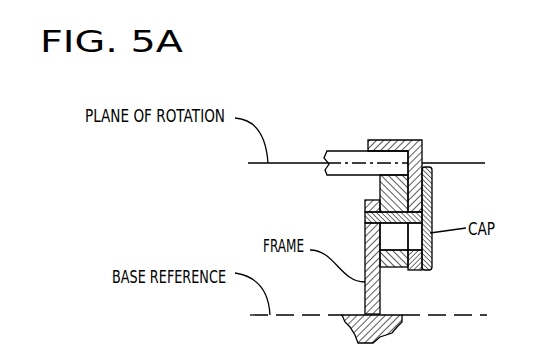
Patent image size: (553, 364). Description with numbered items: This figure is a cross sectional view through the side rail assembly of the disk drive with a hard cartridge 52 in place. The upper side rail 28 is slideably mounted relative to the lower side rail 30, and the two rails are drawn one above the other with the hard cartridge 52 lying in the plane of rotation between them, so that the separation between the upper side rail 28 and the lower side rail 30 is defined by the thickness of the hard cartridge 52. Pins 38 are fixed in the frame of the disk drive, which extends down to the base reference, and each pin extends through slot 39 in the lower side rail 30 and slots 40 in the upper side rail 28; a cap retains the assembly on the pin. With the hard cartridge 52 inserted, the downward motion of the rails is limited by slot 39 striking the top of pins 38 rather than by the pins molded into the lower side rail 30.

The hard cartridge 52 is at (352, 151).
The upper side rail 28 is at (400, 140).
The lower side rail 30 is at (392, 188).
The pins 38 is at (368, 218).
The slot 39 is at (390, 240).
The slots 40 is at (413, 242).